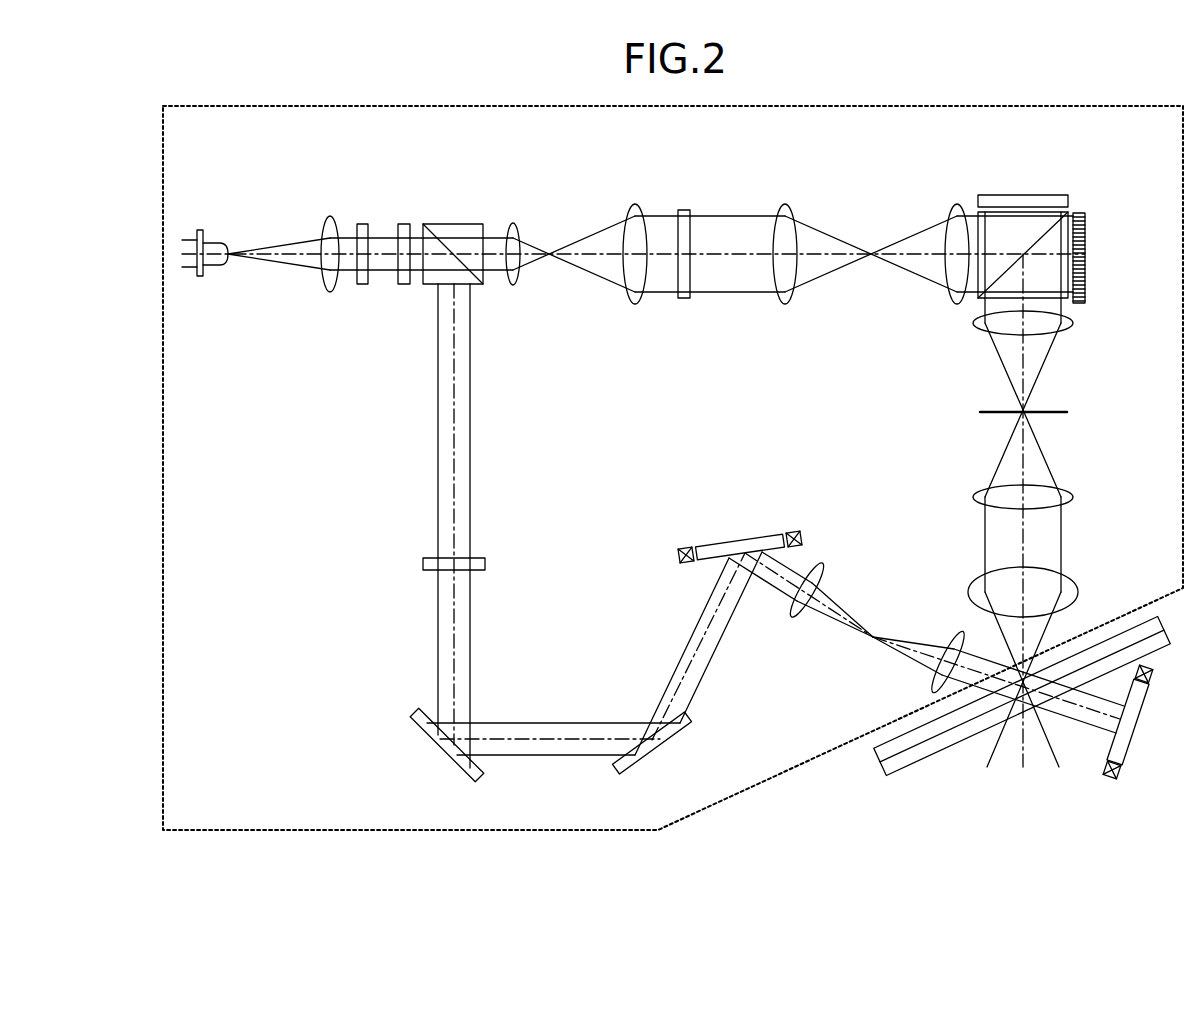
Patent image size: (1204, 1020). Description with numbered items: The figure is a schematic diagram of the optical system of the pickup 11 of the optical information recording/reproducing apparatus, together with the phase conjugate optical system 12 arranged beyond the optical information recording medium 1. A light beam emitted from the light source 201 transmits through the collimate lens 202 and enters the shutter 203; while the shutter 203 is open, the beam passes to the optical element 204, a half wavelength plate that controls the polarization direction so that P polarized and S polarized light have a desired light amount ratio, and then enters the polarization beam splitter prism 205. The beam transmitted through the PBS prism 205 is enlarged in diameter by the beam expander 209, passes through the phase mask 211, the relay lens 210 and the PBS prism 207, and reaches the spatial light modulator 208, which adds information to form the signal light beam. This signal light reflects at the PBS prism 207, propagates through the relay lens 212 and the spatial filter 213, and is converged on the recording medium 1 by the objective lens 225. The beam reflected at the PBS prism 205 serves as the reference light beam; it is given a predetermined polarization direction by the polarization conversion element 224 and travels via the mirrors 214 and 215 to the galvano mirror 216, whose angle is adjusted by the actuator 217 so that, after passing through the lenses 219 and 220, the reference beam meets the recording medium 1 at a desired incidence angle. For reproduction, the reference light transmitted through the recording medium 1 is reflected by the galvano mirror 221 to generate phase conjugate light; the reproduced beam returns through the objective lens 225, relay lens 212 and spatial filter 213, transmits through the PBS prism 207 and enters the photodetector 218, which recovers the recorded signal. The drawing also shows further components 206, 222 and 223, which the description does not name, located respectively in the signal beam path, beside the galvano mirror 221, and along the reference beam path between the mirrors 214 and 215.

The optical information recording medium 1 is at (916, 765).
The pickup 11 is at (262, 832).
The phase conjugate optical system 12 is at (1143, 833).
The light source 201 is at (218, 236).
The collimate lens 202 is at (330, 215).
The shutter 203 is at (362, 224).
The optical element 204 is at (404, 224).
The polarization beam splitter prism 205 is at (455, 224).
The relay lens 206 is at (728, 225).
The polarization beam splitter prism 207 is at (995, 237).
The spatial light modulator 208 is at (1085, 255).
The beam expander 209 is at (513, 195).
The relay lens 210 is at (957, 195).
The phase mask 211 is at (684, 298).
The relay lens 212 is at (958, 325).
The spatial filter 213 is at (1062, 409).
The mirror 214 is at (440, 750).
The mirror 215 is at (664, 752).
The galvano mirror 216 is at (753, 538).
The actuator 217 is at (680, 546).
The photodetector 218 is at (1027, 195).
The lens 219 is at (795, 620).
The lens 220 is at (954, 642).
The galvano mirror 221 is at (1138, 735).
The actuator 222 is at (1114, 782).
The reference beam 223 is at (560, 722).
The polarization conversion element 224 is at (423, 563).
The objective lens 225 is at (1072, 597).